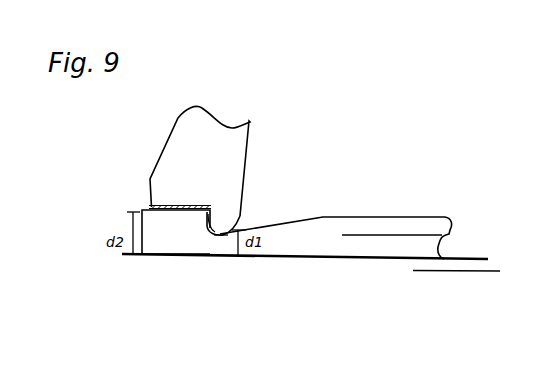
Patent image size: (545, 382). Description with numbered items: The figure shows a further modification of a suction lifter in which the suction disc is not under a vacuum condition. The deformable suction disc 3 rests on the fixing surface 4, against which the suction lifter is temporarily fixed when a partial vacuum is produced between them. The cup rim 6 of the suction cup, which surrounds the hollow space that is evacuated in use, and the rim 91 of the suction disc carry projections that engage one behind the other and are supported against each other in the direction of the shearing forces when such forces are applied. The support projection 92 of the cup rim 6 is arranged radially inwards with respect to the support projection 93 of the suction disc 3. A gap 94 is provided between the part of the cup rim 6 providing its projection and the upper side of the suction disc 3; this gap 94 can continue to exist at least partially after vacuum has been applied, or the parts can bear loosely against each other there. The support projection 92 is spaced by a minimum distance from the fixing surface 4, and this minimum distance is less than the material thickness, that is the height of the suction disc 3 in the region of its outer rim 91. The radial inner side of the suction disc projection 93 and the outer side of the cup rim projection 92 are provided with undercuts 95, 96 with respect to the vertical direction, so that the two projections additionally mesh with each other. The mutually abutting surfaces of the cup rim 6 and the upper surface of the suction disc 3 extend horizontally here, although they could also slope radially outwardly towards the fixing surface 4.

The suction disc 3 is at (280, 255).
The fixing surface 4 is at (181, 256).
The cup rim 6 is at (165, 172).
The rim of the suction disc 91 is at (163, 255).
The support projection of the cup rim 92 is at (221, 220).
The support projection of the suction disc 93 is at (180, 222).
The gap 94 is at (220, 234).
The undercut 95 is at (212, 212).
The undercut 96 is at (152, 204).